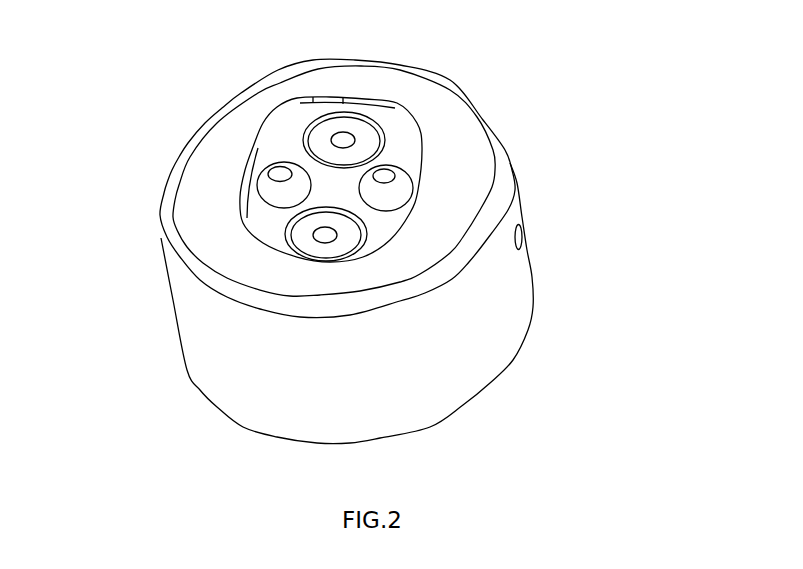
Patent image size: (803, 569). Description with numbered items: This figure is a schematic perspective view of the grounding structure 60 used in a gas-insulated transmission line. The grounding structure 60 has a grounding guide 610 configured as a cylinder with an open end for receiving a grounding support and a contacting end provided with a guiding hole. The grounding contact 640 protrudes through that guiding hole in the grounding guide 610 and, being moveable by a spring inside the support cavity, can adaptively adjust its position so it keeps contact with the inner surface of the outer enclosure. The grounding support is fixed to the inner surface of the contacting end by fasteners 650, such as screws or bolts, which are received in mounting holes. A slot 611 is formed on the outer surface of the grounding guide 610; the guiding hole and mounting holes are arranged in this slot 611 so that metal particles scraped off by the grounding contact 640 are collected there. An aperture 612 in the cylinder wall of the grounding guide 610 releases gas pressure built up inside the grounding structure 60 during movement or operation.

The grounding structure 60 is at (170, 103).
The grounding guide 610 is at (472, 163).
The slot 611 is at (263, 228).
The aperture 612 is at (522, 237).
The grounding contact 640 is at (278, 186).
The fastener 650 is at (362, 130).